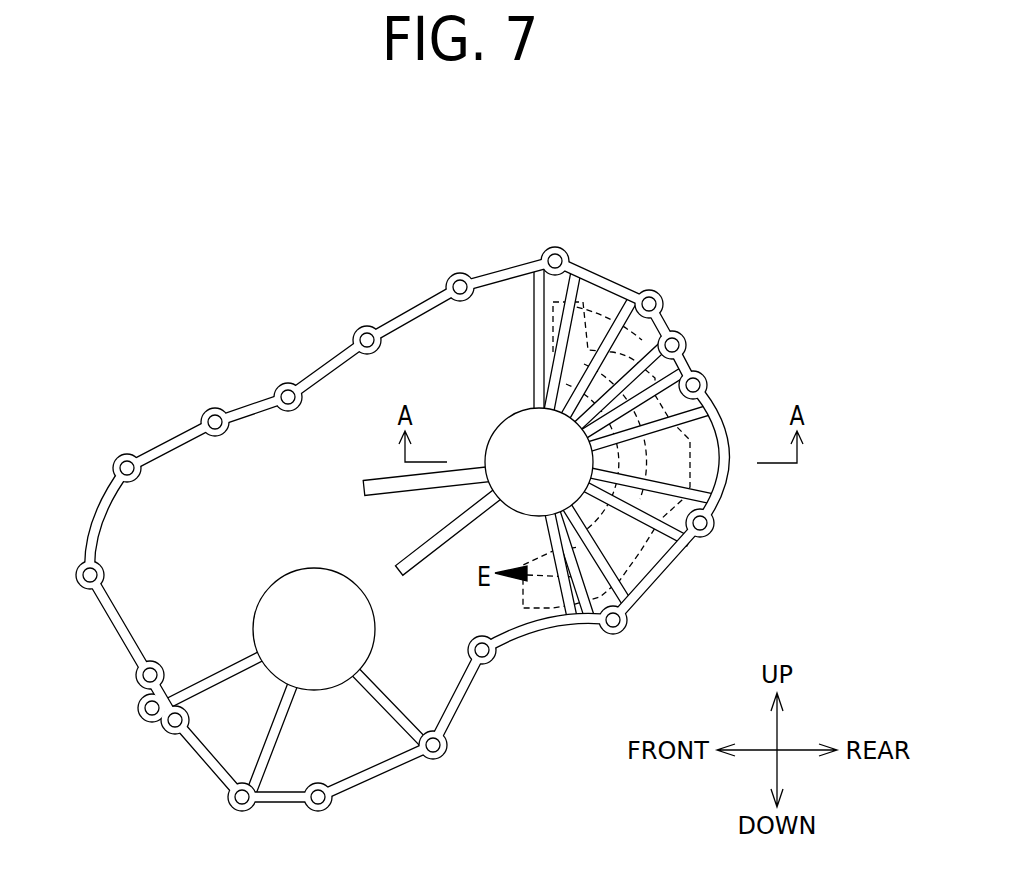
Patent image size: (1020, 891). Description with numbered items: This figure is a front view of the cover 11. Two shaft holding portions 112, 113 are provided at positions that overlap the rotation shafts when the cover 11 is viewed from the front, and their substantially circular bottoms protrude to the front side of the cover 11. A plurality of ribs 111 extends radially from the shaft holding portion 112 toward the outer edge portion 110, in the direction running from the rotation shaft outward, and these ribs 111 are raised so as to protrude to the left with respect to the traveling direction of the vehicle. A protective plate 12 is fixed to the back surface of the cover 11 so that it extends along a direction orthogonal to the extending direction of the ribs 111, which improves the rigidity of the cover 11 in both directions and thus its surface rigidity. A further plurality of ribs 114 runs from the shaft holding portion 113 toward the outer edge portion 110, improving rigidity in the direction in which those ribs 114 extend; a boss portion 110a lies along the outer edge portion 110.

The cover 11 is at (750, 252).
The protective plate 12 is at (663, 316).
The outer edge portion 110 is at (480, 266).
The fastening boss 110a is at (456, 276).
The ribs 111 is at (531, 300).
The shaft holding portion 112 is at (497, 425).
The shaft holding portion 113 is at (254, 609).
The ribs 114 is at (205, 677).